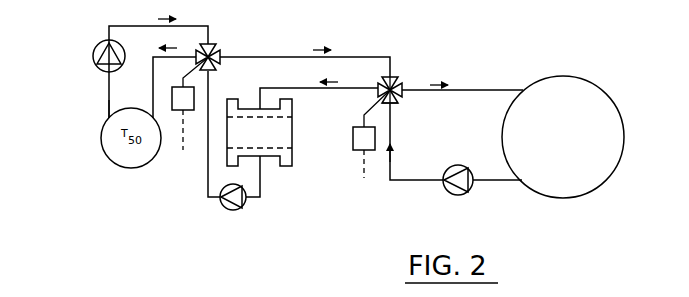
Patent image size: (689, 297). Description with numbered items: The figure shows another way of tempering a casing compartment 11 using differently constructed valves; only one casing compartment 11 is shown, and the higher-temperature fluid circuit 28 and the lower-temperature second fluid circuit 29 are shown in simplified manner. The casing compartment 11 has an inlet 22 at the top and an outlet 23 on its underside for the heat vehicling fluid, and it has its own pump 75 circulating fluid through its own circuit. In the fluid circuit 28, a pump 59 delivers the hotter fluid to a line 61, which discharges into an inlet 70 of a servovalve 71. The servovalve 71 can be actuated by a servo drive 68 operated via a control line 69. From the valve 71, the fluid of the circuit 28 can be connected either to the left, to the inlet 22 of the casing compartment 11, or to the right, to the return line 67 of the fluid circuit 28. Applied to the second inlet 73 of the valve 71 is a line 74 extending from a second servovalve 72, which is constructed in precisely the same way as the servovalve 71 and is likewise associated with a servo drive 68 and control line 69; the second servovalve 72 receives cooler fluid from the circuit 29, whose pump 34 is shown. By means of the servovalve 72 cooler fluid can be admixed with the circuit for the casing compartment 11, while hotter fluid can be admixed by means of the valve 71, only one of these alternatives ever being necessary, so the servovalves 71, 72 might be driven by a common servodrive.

The casing compartment 11 is at (293, 157).
The inlet 22 is at (275, 88).
The outlet 23 is at (261, 181).
The fluid circuit 28 is at (506, 80).
The second fluid circuit 29 is at (100, 103).
The pump 34 is at (94, 50).
The pump 59 is at (471, 190).
The line 61 is at (416, 180).
The return line 67 is at (473, 89).
The servo drive 68 is at (178, 87).
The control line 69 is at (181, 140).
The inlet 70 is at (393, 100).
The servovalve 71 is at (404, 78).
The second servovalve 72 is at (210, 55).
The second inlet 73 is at (383, 84).
The line 74 is at (285, 56).
The pump 75 is at (243, 208).